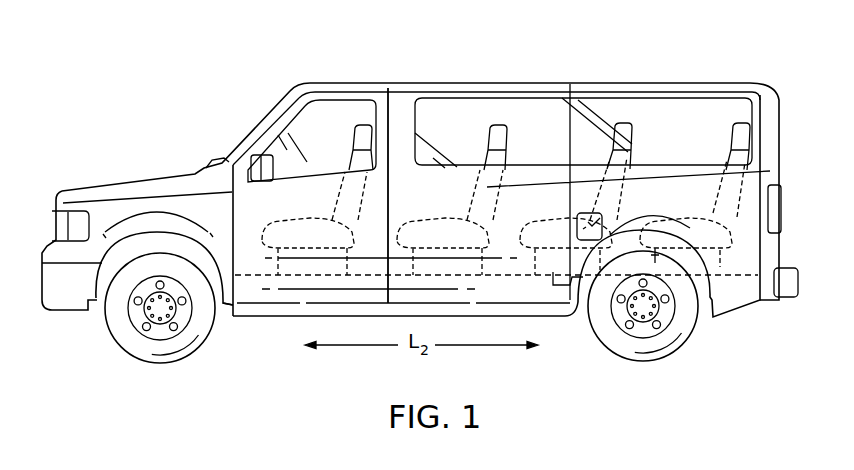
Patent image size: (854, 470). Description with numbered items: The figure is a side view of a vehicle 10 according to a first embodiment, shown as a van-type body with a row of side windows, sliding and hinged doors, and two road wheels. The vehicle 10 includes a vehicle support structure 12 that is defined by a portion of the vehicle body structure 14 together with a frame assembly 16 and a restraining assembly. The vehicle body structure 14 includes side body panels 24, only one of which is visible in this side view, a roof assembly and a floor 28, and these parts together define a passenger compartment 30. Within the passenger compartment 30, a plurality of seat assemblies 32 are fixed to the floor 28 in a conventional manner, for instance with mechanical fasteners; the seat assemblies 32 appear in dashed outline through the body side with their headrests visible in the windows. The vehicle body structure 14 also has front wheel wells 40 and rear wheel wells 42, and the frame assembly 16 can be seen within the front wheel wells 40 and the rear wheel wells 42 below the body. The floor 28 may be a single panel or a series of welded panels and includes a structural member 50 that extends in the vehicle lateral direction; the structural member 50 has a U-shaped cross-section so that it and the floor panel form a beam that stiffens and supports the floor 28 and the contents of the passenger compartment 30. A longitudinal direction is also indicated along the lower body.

The vehicle 10 is at (547, 53).
The vehicle support structure 12 is at (567, 318).
The vehicle body structure 14 is at (667, 82).
The frame assembly 16 is at (228, 317).
The side body panel 24 is at (402, 110).
The floor 28 is at (609, 80).
The passenger compartment 30 is at (443, 113).
The seat assembly 32 is at (352, 131).
The front wheel well 40 is at (98, 307).
The rear wheel well 42 is at (706, 305).
The structural member 50 is at (553, 283).